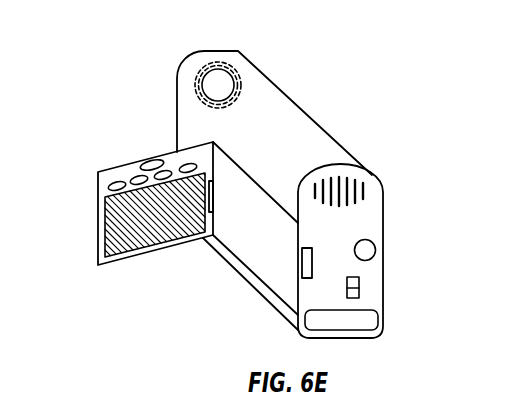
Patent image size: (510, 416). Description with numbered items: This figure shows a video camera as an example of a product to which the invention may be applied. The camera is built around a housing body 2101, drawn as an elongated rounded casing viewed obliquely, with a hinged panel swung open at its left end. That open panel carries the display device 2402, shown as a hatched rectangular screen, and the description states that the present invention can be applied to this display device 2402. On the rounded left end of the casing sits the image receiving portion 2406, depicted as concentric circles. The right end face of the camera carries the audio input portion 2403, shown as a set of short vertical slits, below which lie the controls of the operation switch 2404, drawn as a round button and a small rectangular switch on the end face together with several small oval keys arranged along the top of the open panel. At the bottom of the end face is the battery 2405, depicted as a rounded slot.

The housing body 2101 is at (300, 108).
The image receiving portion 2406 is at (223, 63).
The audio input portion 2403 is at (362, 187).
The operation switch 2404 is at (352, 293).
The display device 2402 is at (150, 223).
The battery 2405 is at (322, 318).